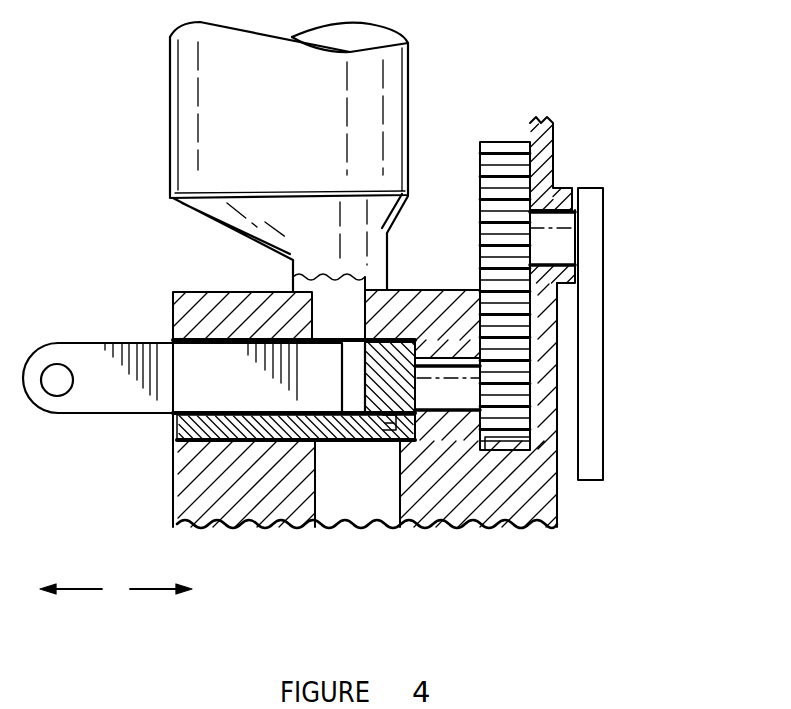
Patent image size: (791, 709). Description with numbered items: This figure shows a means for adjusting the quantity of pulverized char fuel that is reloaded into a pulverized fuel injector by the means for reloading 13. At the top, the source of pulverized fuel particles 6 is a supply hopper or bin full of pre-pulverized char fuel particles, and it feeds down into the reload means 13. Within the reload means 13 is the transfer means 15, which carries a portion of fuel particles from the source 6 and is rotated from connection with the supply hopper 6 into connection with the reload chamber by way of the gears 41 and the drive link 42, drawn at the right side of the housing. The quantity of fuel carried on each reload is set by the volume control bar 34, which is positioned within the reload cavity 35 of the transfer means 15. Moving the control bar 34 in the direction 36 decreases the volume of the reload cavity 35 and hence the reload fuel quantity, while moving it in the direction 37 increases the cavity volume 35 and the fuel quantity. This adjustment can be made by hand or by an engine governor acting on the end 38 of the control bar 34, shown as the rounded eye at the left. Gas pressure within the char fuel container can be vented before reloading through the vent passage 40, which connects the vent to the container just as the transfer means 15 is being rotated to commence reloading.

The source of pulverized fuel particles 6 is at (367, 105).
The means for reloading 13 is at (213, 291).
The transfer means 15 is at (193, 424).
The volume control bar 34 is at (117, 343).
The reload cavity 35 is at (352, 380).
The direction to decrease reload cavity volume 36 is at (161, 601).
The direction to increase reload cavity volume 37 is at (71, 601).
The end of the control bar 38 is at (58, 386).
The vent passage 40 is at (400, 424).
The gears 41 is at (505, 195).
The drive link 42 is at (605, 462).